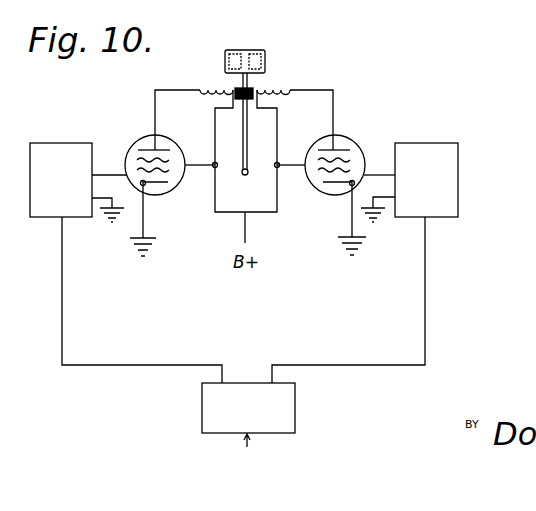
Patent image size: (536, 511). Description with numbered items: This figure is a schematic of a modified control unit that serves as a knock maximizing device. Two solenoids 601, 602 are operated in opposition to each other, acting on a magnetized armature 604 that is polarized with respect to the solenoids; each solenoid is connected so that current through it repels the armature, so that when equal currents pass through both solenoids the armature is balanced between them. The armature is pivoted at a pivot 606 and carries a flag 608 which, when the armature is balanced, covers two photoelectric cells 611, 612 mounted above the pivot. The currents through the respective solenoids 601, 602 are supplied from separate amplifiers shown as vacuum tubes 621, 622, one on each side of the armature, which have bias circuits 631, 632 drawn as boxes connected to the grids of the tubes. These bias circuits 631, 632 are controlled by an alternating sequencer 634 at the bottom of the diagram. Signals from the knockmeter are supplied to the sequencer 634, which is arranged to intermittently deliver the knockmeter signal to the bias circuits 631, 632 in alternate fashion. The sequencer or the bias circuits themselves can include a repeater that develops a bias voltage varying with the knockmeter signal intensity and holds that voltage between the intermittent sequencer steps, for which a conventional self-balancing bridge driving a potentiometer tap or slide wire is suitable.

The solenoid 601 is at (200, 89).
The solenoid 602 is at (288, 88).
The magnetized armature 604 is at (233, 97).
The pivot 606 is at (247, 168).
The flag 608 is at (240, 50).
The photoelectric cell 611 is at (226, 61).
The photoelectric cell 612 is at (266, 61).
The vacuum tube 621 is at (163, 190).
The vacuum tube 622 is at (317, 184).
The bias circuit 631 is at (80, 192).
The bias circuit 632 is at (445, 190).
The alternating sequencer 634 is at (295, 410).